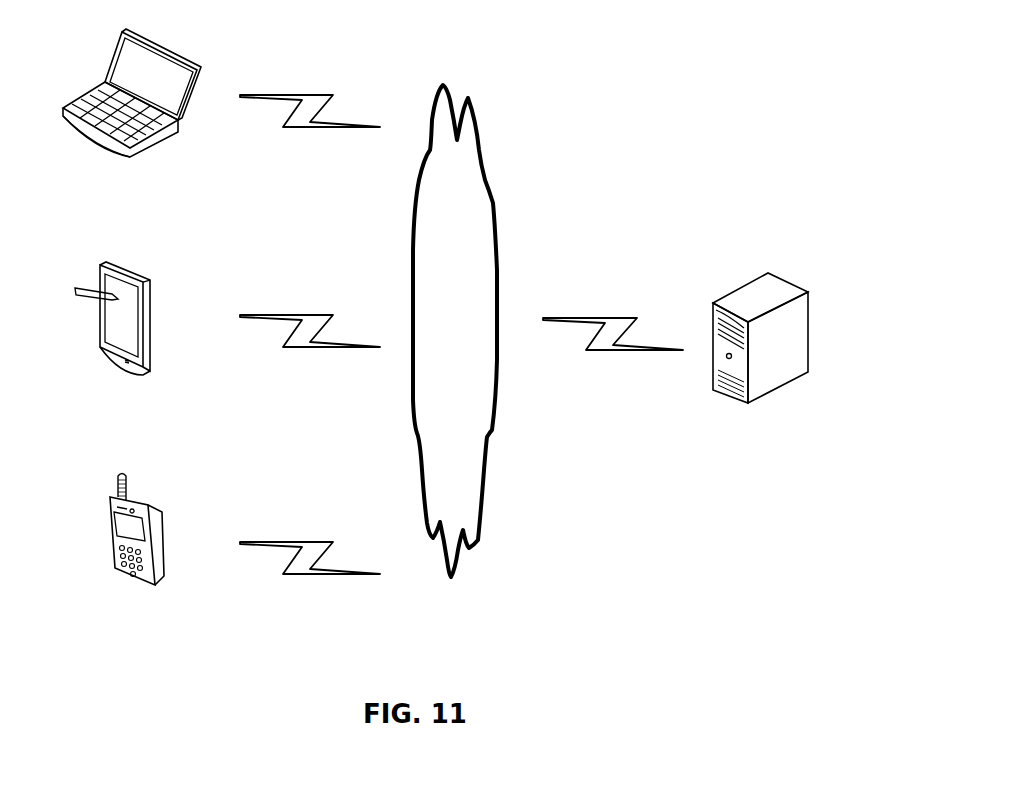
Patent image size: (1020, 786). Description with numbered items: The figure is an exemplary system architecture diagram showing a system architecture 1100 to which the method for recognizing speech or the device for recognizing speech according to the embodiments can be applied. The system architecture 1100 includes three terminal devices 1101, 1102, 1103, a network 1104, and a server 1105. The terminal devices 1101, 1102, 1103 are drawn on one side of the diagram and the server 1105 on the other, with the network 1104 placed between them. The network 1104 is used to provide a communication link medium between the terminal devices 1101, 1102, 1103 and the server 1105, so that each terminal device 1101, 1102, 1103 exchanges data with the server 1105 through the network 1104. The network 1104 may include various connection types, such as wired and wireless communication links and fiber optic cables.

The system architecture 1100 is at (705, 24).
The terminal device 1101 is at (137, 546).
The terminal device 1102 is at (112, 336).
The terminal device 1103 is at (132, 111).
The network 1104 is at (455, 331).
The server 1105 is at (760, 356).